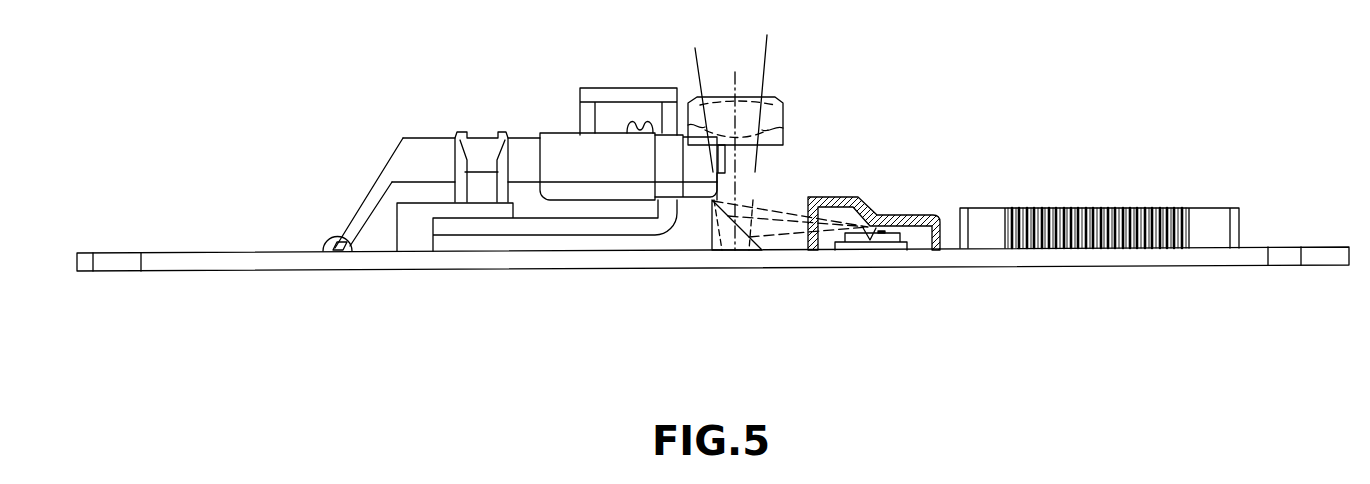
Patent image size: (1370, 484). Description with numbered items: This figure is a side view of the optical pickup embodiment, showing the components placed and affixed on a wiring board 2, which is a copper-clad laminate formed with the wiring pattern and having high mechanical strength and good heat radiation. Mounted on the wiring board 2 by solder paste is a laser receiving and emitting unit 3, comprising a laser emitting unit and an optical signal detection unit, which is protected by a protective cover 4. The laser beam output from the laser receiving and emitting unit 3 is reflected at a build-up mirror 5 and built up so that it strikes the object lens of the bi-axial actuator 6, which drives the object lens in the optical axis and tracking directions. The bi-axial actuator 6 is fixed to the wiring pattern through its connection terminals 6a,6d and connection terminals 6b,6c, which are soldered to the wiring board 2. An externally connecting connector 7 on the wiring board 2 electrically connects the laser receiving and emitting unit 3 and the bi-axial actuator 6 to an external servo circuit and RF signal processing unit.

The wiring board 2 is at (173, 252).
The laser receiving and emitting unit 3 is at (903, 243).
The protective cover 4 is at (907, 215).
The build-up mirror 5 is at (737, 243).
The bi-axial actuator 6 is at (572, 78).
The connection terminals 6a,6d is at (385, 167).
The connection terminals 6b,6c is at (358, 228).
The externally connecting connector 7 is at (1210, 208).